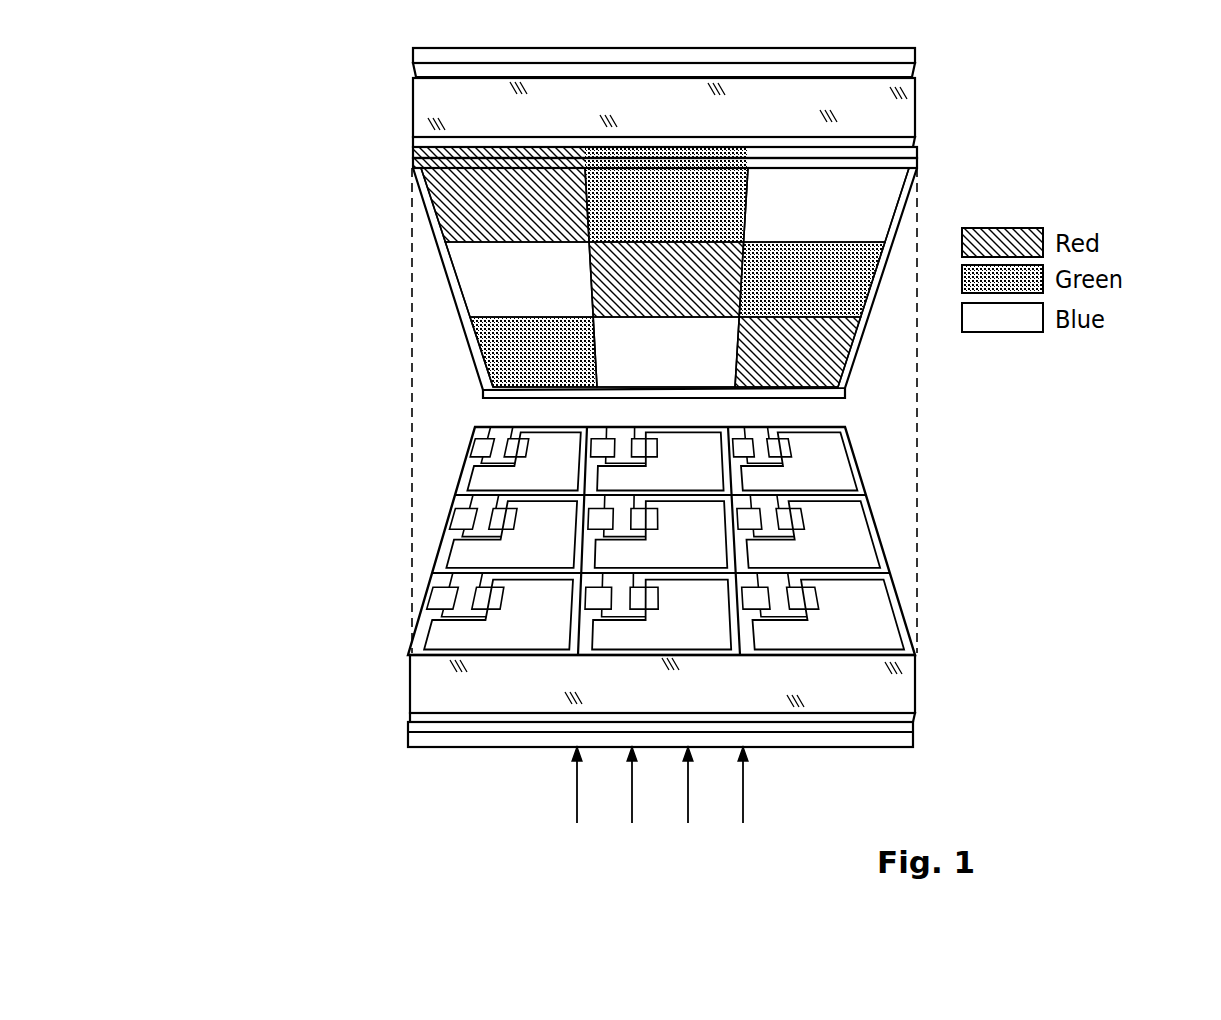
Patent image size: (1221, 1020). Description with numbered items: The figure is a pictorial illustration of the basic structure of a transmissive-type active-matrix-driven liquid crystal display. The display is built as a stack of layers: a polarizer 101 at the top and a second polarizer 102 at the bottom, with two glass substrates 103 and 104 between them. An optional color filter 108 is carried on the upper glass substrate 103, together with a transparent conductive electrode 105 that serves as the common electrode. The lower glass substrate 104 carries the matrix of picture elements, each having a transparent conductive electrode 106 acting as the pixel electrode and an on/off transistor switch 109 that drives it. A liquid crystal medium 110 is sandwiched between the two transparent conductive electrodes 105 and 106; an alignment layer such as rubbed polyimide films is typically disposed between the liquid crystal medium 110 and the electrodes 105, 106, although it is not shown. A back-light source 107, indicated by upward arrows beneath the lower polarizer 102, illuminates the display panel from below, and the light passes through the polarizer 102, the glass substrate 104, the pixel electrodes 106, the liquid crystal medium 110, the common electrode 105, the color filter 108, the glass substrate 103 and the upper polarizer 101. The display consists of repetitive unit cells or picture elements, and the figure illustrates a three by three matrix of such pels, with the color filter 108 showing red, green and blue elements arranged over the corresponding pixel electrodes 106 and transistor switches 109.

The polarizer 101 is at (415, 55).
The polarizer 102 is at (435, 747).
The glass substrate 103 is at (413, 101).
The glass substrate 104 is at (430, 698).
The transparent conductive electrode 105 is at (413, 165).
The transparent conductive electrode 106 is at (848, 545).
The back-light source 107 is at (660, 820).
The color filter 108 is at (413, 151).
The on/off transistor switch 109 is at (787, 518).
The liquid crystal medium 110 is at (664, 410).